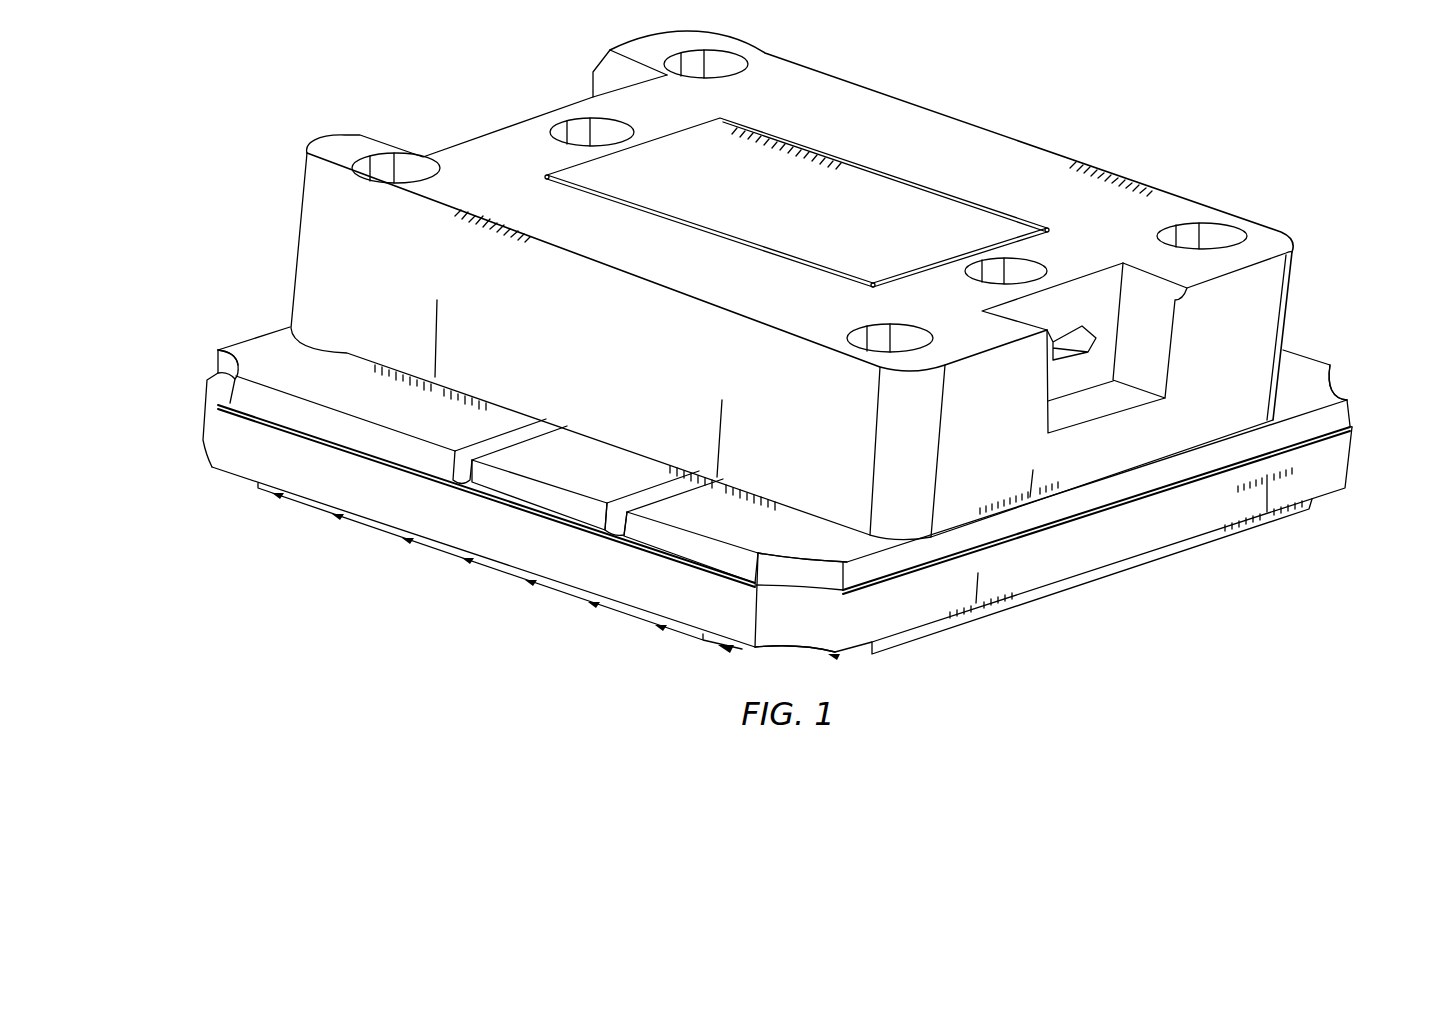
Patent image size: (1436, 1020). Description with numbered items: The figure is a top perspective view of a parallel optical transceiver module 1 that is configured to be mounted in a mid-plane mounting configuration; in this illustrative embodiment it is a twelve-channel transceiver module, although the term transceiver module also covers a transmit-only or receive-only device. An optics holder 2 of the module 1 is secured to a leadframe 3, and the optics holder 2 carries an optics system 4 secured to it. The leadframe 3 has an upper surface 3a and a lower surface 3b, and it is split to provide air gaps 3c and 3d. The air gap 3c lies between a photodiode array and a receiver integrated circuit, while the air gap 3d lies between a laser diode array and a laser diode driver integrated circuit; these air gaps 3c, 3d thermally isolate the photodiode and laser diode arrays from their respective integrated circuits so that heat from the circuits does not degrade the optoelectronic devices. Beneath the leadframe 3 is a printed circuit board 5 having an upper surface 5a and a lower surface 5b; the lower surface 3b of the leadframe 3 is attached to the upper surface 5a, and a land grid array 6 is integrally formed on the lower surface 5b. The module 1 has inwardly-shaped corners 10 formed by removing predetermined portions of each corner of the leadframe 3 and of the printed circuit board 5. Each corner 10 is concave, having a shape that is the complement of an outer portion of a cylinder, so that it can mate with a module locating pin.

The parallel optical transceiver module 1 is at (788, 360).
The optics holder 2 is at (792, 285).
The leadframe 3 is at (760, 487).
The upper surface 3a is at (387, 418).
The lower surface 3b is at (252, 420).
The air gap 3c is at (490, 466).
The air gap 3d is at (610, 518).
The optics system 4 is at (873, 203).
The printed circuit board 5 is at (782, 540).
The upper surface 5a is at (1090, 505).
The lower surface 5b is at (1107, 566).
The land grid array 6 is at (372, 529).
The inwardly-shaped corner 10 is at (205, 374).